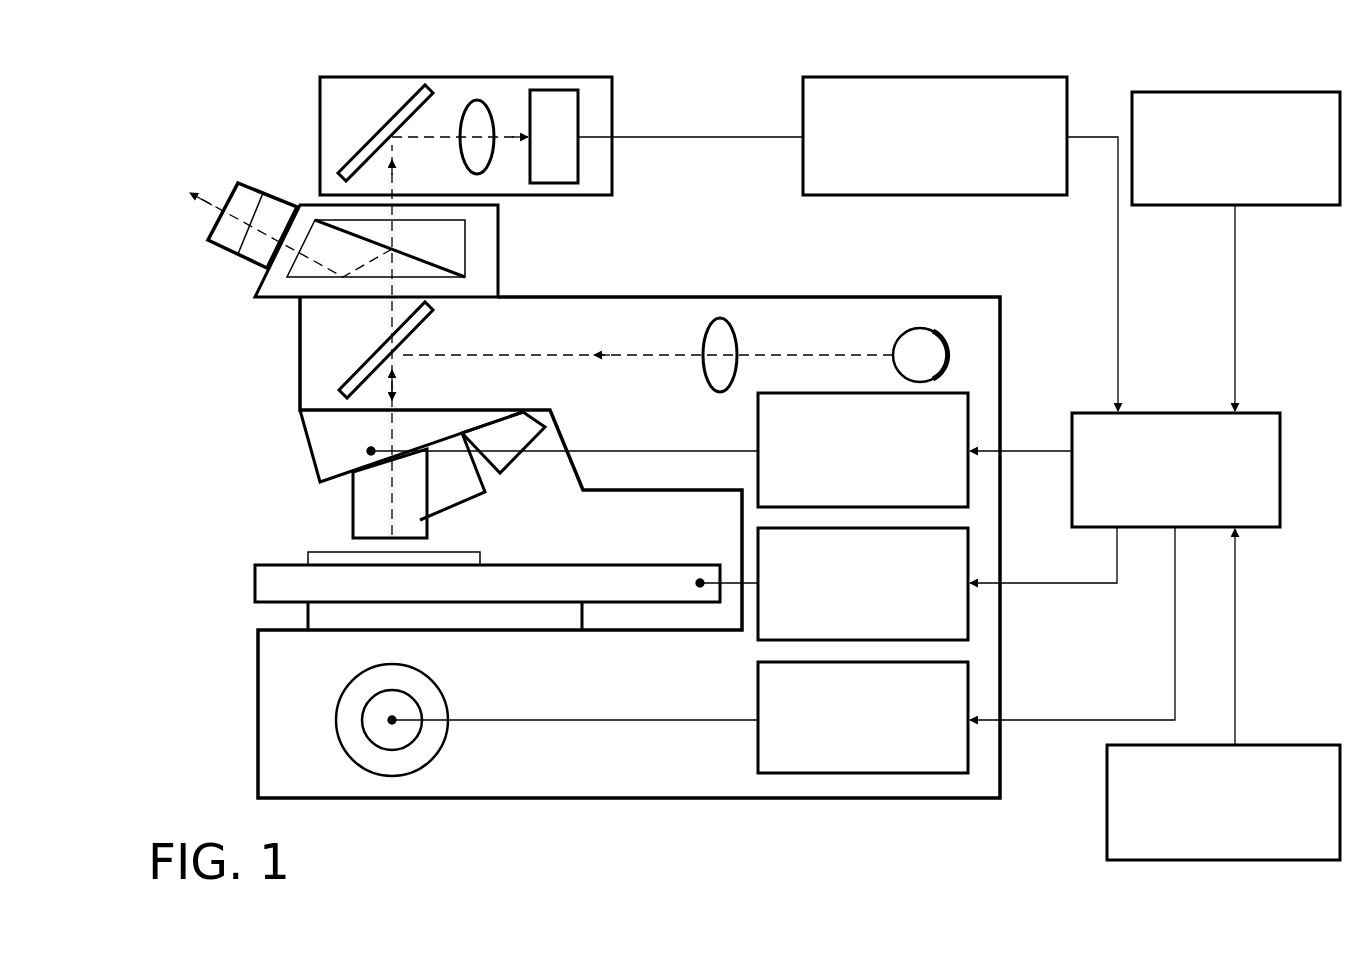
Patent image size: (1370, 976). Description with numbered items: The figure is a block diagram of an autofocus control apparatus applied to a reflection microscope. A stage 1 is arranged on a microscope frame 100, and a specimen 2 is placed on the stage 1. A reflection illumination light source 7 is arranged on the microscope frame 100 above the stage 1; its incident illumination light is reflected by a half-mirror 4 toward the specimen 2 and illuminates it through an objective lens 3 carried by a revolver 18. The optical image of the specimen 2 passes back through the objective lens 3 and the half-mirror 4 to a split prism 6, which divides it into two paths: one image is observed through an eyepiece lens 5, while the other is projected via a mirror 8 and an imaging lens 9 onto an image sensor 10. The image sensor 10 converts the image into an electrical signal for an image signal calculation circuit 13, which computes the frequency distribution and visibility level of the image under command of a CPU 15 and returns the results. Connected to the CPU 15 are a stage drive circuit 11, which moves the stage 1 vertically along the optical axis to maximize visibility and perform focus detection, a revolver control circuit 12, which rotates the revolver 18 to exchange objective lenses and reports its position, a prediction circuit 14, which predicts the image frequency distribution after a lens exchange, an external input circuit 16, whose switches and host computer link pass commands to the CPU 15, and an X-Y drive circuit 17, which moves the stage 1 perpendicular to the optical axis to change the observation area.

The stage 1 is at (255, 587).
The specimen 2 is at (310, 554).
The objective lens 3 is at (353, 512).
The half-mirror 4 is at (352, 377).
The eyepiece lens 5 is at (272, 193).
The split prism 6 is at (465, 244).
The reflection illumination light source 7 is at (895, 345).
The mirror 8 is at (399, 100).
The imaging lens 9 is at (474, 100).
The image sensor 10 is at (555, 92).
The stage drive circuit 11 is at (758, 690).
The revolver control circuit 12 is at (960, 393).
The image signal calculation circuit 13 is at (945, 77).
The prediction circuit 14 is at (1238, 92).
The CPU 15 is at (1280, 472).
The external input circuit 16 is at (1305, 745).
The X-Y drive circuit 17 is at (968, 541).
The revolver 18 is at (314, 458).
The microscope frame 100 is at (741, 297).